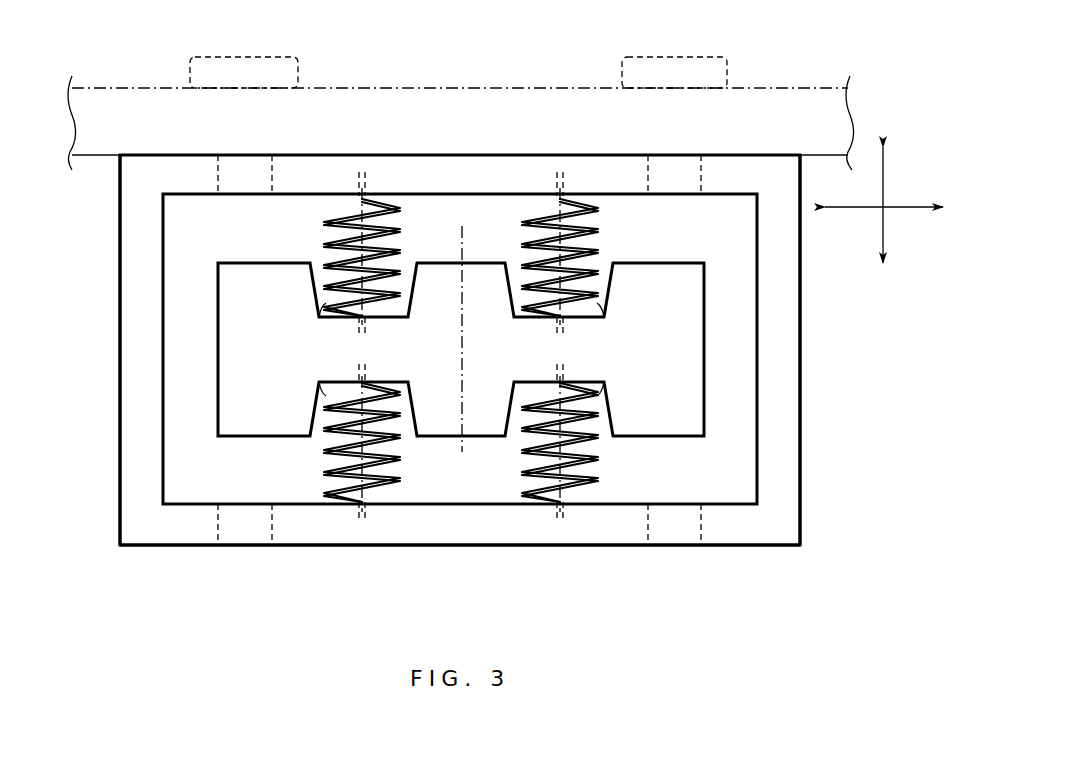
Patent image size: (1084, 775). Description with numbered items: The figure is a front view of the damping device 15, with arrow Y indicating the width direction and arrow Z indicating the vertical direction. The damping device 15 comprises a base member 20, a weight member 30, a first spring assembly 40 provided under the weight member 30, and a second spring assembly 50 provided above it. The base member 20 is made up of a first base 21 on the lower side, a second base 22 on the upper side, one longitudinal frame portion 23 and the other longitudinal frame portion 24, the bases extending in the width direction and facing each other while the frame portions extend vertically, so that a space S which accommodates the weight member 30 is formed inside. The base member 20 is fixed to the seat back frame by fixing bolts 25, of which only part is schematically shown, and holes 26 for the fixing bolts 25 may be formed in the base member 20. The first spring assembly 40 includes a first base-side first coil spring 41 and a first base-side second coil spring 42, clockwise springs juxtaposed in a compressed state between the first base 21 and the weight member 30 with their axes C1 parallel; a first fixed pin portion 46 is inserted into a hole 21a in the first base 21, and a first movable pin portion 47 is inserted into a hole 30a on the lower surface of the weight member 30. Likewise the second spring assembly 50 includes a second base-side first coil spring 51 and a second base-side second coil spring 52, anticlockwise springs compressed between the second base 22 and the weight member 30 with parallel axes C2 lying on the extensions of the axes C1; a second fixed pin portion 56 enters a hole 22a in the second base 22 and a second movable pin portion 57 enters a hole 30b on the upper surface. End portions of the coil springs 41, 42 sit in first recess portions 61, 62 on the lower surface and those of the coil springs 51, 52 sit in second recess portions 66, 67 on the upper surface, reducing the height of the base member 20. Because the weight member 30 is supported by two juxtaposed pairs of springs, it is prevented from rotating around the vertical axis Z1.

The damping device 15 is at (823, 337).
The base member 20 is at (742, 548).
The first base 21 is at (465, 535).
The hole 21a is at (362, 513).
The second base 22 is at (437, 170).
The hole 22a is at (362, 192).
The one longitudinal frame portion 23 is at (128, 363).
The other longitudinal frame portion 24 is at (780, 378).
The fixing bolt 25 is at (245, 56).
The hole 26 is at (272, 175).
The weight member 30 is at (690, 312).
The hole 30a is at (362, 375).
The hole 30b is at (360, 326).
The first spring assembly 40 is at (349, 442).
The first base-side first coil spring 41 is at (398, 488).
The first base-side second coil spring 42 is at (596, 488).
The first fixed pin portion 46 is at (362, 524).
The first movable pin portion 47 is at (356, 370).
The second spring assembly 50 is at (338, 257).
The second base-side first coil spring 51 is at (396, 234).
The second base-side second coil spring 52 is at (596, 234).
The second fixed pin portion 56 is at (358, 176).
The second movable pin portion 57 is at (356, 326).
The first recess portion 61 is at (322, 386).
The first recess portion 62 is at (601, 386).
The second recess portion 66 is at (322, 314).
The second recess portion 67 is at (601, 314).
The first axis C1 is at (385, 452).
The second axis C2 is at (386, 250).
The vertical axis Z1 is at (466, 240).
The space S is at (732, 410).
The arrow Z is at (884, 178).
The arrow Y is at (856, 208).